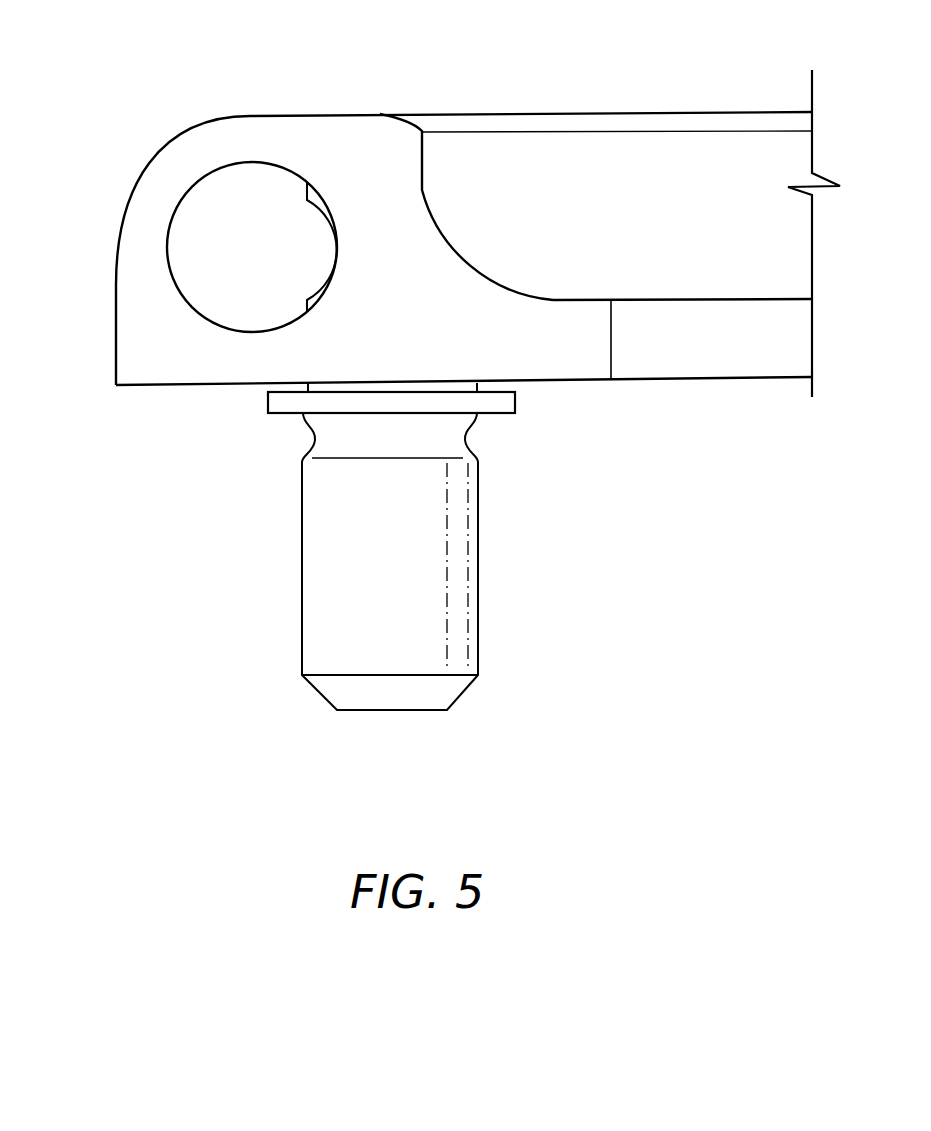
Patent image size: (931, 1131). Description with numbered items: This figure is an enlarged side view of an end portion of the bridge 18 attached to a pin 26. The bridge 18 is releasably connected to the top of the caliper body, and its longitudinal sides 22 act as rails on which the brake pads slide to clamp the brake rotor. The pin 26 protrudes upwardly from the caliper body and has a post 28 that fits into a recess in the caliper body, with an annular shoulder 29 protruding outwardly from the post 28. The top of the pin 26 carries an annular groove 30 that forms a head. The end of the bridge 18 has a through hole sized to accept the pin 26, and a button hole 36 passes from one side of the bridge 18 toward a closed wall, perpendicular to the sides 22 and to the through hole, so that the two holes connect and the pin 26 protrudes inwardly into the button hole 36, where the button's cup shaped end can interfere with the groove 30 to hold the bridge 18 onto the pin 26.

The bridge 18 is at (186, 68).
The longitudinal sides 22 is at (662, 300).
The pin 26 is at (312, 437).
The post 28 is at (478, 567).
The annular shoulder 29 is at (268, 400).
The annular groove 30 is at (335, 246).
The button hole 36 is at (166, 246).